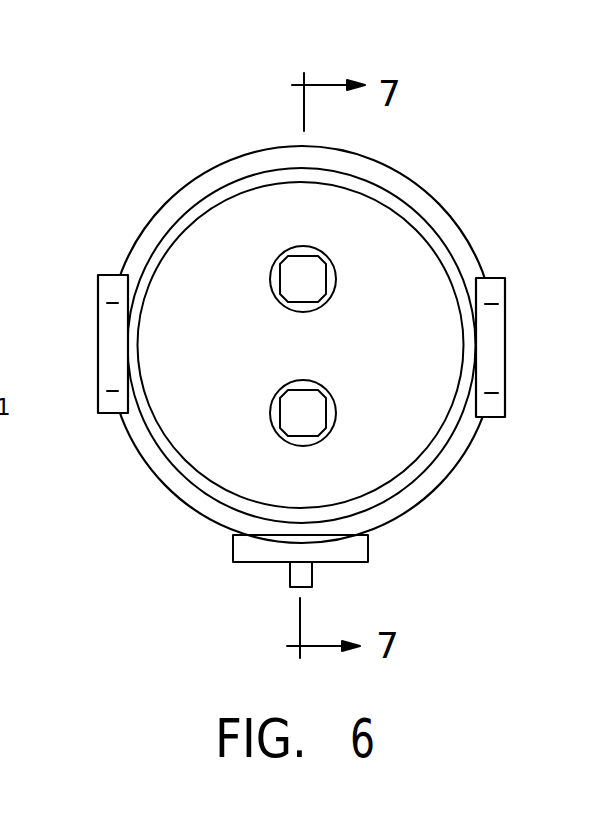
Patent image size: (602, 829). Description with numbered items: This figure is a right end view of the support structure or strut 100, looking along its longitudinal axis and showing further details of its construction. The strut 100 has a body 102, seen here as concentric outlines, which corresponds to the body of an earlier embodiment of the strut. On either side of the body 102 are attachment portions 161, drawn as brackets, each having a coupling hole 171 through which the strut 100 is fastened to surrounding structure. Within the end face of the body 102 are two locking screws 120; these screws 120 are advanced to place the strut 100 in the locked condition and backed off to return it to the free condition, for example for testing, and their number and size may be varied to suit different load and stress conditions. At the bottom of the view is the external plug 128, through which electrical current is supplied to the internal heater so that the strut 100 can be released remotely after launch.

The support strut 100 is at (162, 79).
The body 102 is at (430, 193).
The locking screws 120 is at (300, 282).
The external plug 128 is at (355, 548).
The attachment portion 161 is at (110, 283).
The coupling hole 171 is at (105, 333).